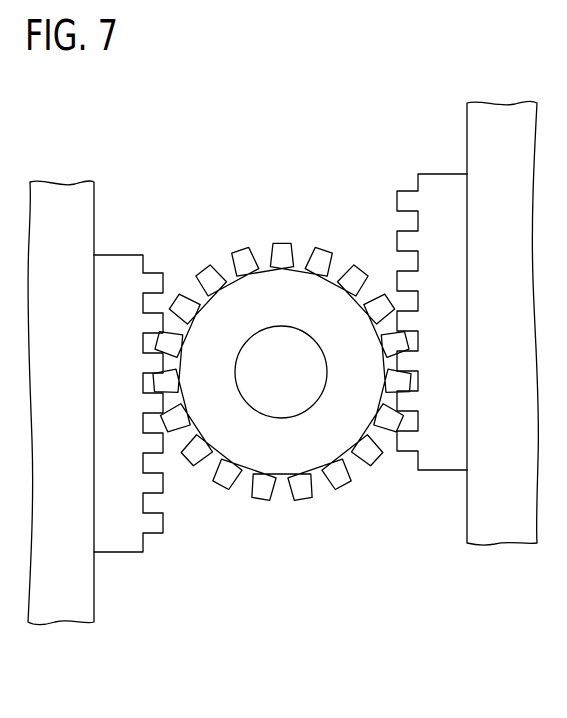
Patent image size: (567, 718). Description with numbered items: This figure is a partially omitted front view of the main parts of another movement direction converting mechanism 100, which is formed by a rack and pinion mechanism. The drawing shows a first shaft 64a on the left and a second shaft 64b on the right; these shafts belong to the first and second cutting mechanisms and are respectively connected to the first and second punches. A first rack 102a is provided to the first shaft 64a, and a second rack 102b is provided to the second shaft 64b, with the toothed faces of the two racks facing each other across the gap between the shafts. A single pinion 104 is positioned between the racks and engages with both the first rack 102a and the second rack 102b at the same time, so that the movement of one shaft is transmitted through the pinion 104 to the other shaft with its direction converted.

The movement direction converting mechanism 100 is at (150, 97).
The first shaft 64a is at (65, 617).
The second shaft 64b is at (495, 535).
The first rack 102a is at (118, 262).
The second rack 102b is at (440, 180).
The pinion 104 is at (295, 447).